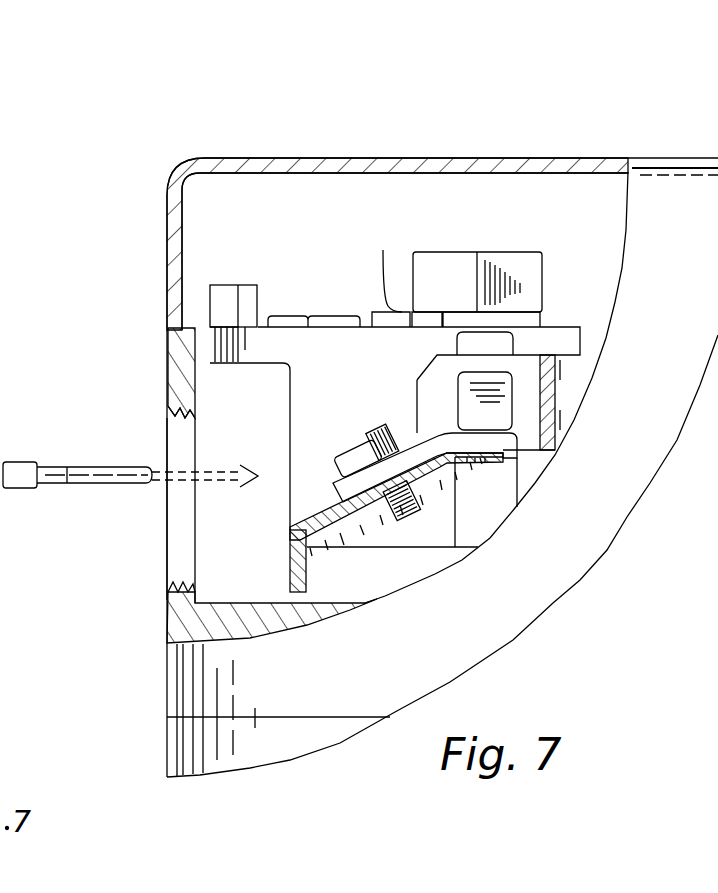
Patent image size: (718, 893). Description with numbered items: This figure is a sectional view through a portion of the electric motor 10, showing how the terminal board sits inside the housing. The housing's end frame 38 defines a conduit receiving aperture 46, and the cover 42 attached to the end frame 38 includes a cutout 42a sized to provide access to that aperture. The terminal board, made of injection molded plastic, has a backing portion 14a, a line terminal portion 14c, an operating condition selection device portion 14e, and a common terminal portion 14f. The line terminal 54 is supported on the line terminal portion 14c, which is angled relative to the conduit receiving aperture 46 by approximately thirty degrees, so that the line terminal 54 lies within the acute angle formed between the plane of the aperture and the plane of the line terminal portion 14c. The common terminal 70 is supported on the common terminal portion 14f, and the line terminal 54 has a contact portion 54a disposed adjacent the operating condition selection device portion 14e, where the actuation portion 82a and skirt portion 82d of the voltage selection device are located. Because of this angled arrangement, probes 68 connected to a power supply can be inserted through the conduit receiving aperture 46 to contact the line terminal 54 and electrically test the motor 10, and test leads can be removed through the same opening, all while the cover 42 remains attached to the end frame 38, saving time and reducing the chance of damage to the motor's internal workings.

The electric motor 10 is at (535, 70).
The cover 42 is at (392, 156).
The end frame 38 is at (190, 330).
The cutout 42a is at (182, 380).
The conduit receiving aperture 46 is at (178, 420).
The probes 68 is at (66, 478).
The common terminal portion 14f is at (262, 327).
The common terminal 70 is at (292, 318).
The skirt portion 82d is at (379, 269).
The actuation portion 82a is at (460, 253).
The operating condition selection device portion 14e is at (567, 345).
The backing portion 14a is at (555, 405).
The line terminal 54 is at (417, 380).
The contact portion 54a is at (483, 497).
The line terminal portion 14c is at (328, 542).